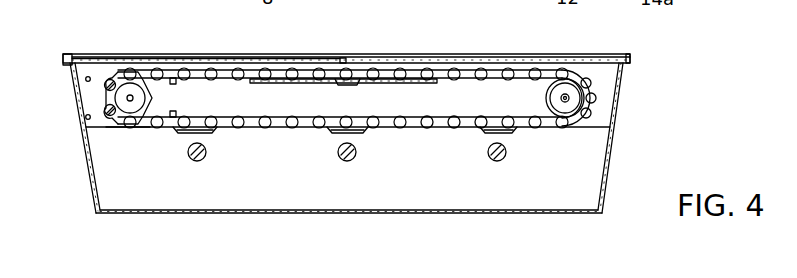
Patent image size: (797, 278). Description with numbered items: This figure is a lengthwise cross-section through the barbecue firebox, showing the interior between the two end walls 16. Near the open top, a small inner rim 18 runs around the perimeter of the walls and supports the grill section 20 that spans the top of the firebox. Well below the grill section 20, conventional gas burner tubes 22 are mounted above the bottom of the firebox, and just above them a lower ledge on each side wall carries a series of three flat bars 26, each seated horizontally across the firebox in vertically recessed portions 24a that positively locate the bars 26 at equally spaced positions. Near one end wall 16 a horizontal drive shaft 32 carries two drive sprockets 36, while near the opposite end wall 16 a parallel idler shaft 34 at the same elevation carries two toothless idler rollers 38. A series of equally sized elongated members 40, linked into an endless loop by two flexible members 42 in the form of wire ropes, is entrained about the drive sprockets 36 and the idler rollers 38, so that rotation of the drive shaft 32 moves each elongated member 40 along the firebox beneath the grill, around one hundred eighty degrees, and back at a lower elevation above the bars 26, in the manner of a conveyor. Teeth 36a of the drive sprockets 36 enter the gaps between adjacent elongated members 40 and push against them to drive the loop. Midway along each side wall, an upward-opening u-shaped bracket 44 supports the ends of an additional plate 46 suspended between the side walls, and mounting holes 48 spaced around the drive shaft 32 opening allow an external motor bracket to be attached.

The end wall 16 is at (85, 162).
The inner rim 18 is at (630, 62).
The grill section 20 is at (90, 62).
The gas burner tubes 22 is at (203, 158).
The vertically recessed portions 24a is at (475, 132).
The bars 26 is at (195, 135).
The drive shaft 32 is at (108, 106).
The idler shaft 34 is at (570, 98).
The drive sprockets 36 is at (150, 152).
The teeth 36a is at (118, 128).
The idler rollers 38 is at (566, 97).
The elongated members 40 is at (482, 117).
The flexible members 42 is at (468, 70).
The u-shaped bracket 44 is at (335, 85).
The additional plate 46 is at (267, 87).
The mounting holes 48 is at (85, 79).